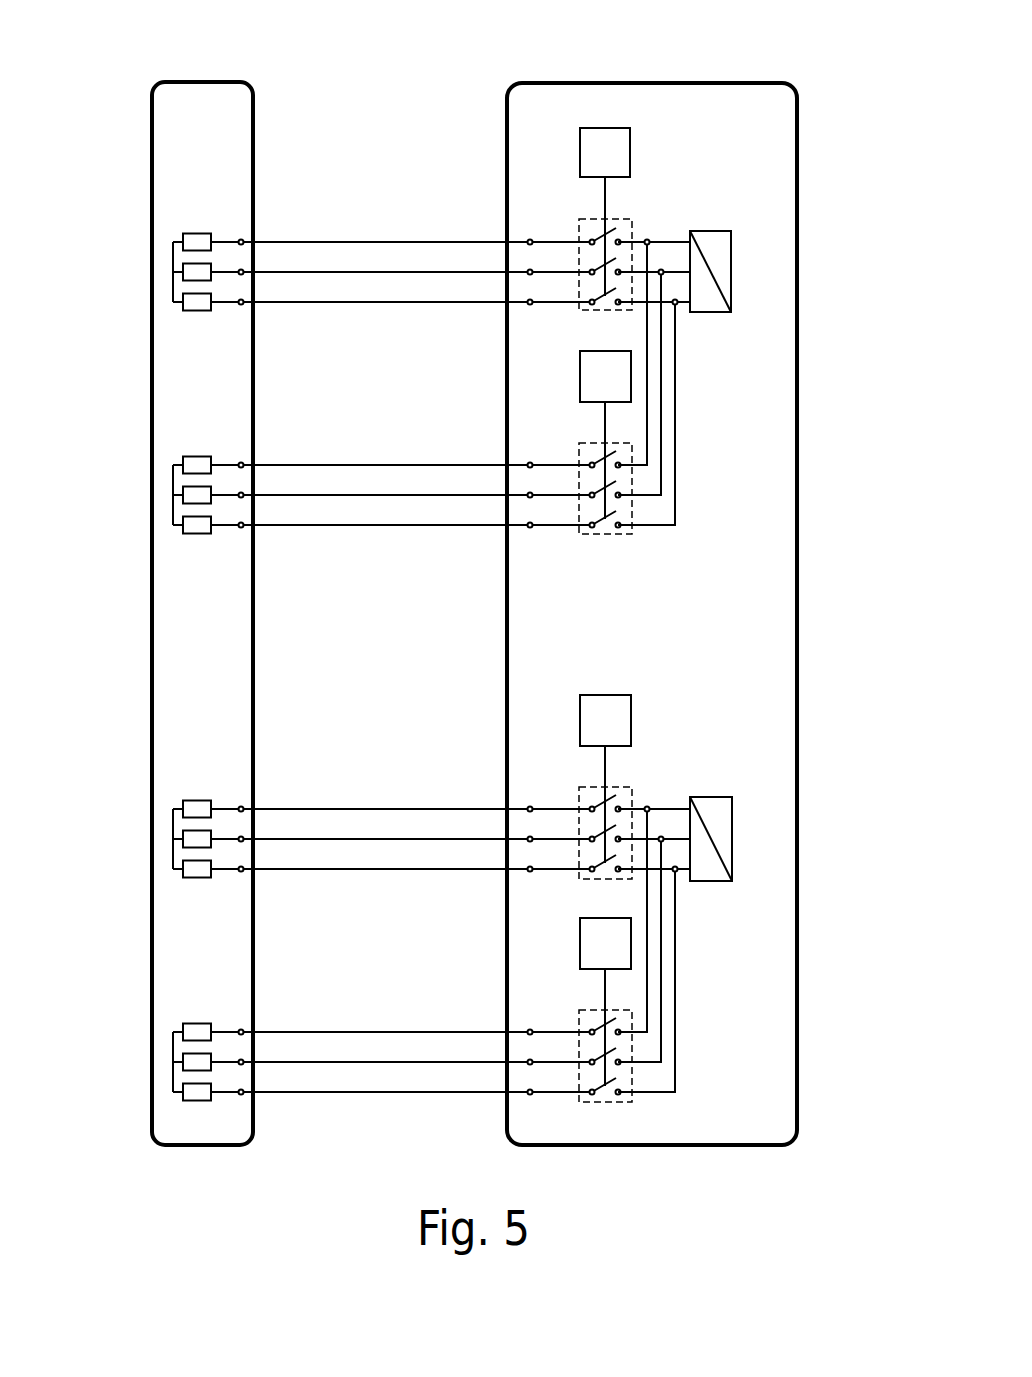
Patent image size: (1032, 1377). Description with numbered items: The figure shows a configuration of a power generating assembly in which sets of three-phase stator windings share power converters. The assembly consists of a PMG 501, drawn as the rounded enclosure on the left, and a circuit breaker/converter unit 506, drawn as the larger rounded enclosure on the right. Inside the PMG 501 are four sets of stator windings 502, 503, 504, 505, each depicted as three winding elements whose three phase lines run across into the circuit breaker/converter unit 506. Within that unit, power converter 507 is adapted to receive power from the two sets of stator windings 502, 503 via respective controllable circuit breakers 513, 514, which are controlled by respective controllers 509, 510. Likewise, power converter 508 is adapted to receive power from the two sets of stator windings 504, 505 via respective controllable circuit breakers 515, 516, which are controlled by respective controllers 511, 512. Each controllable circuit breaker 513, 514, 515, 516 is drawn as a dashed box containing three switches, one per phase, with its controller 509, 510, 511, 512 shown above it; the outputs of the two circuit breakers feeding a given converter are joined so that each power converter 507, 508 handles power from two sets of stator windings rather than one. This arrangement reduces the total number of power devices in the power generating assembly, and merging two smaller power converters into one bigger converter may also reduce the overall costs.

The PMG 501 is at (207, 110).
The set of stator windings 502 is at (163, 275).
The set of stator windings 503 is at (163, 497).
The set of stator windings 504 is at (163, 842).
The set of stator windings 505 is at (163, 1065).
The circuit breaker/converter unit 506 is at (678, 110).
The power converter 507 is at (732, 272).
The power converter 508 is at (732, 840).
The controller 509 is at (605, 212).
The controller 510 is at (605, 435).
The controller 511 is at (605, 779).
The controller 512 is at (605, 1002).
The controllable circuit breaker 513 is at (626, 219).
The controllable circuit breaker 514 is at (613, 535).
The controllable circuit breaker 515 is at (626, 787).
The controllable circuit breaker 516 is at (613, 1102).